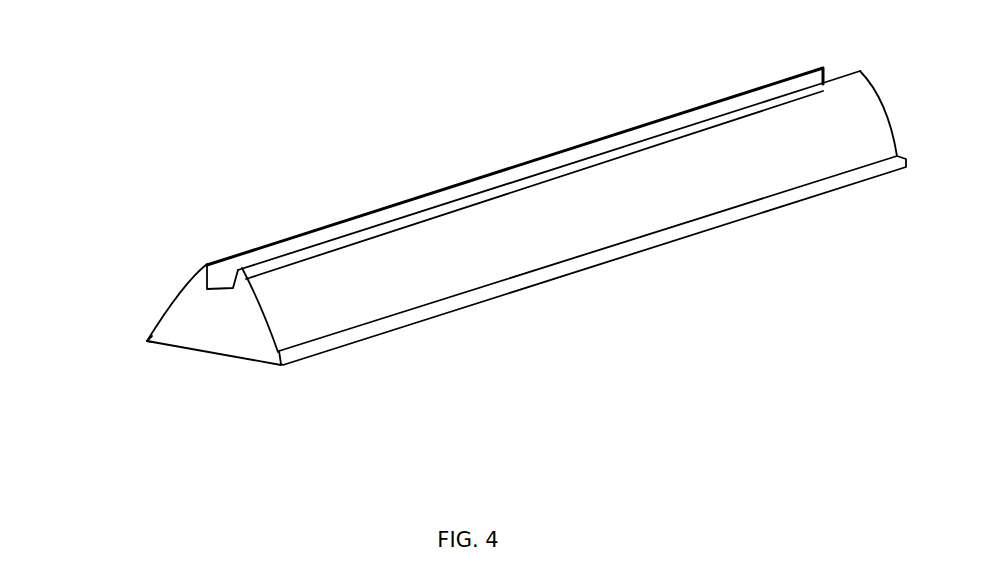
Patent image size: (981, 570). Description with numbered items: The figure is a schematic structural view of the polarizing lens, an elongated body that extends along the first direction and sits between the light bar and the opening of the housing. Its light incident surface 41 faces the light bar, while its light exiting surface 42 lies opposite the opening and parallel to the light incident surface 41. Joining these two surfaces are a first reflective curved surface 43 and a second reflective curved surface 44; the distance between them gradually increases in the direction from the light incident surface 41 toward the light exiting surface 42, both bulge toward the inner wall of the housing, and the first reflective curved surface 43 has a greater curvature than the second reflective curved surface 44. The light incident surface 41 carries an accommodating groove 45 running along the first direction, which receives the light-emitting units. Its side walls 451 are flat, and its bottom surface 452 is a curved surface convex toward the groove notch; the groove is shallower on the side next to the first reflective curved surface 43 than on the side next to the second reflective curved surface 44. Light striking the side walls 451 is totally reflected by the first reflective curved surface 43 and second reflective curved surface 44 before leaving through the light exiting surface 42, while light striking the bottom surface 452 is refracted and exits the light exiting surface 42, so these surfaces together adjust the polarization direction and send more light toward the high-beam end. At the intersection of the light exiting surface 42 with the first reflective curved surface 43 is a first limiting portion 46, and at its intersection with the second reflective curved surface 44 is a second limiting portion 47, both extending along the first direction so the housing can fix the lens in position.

The light incident surface 41 is at (638, 145).
The light exiting surface 42 is at (222, 357).
The first reflective curved surface 43 is at (538, 222).
The second reflective curved surface 44 is at (177, 293).
The accommodating groove 45 is at (407, 213).
The side walls 451 is at (310, 232).
The bottom surface 452 is at (231, 285).
The first limiting portion 46 is at (367, 337).
The second limiting portion 47 is at (147, 341).